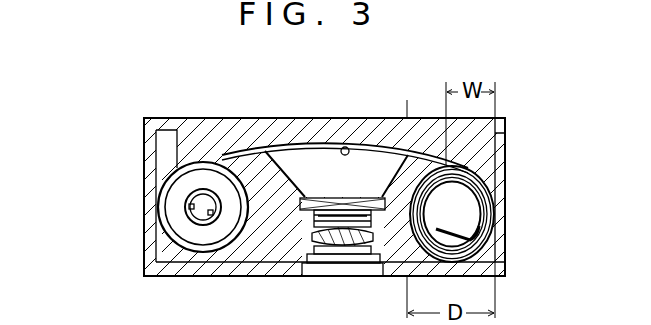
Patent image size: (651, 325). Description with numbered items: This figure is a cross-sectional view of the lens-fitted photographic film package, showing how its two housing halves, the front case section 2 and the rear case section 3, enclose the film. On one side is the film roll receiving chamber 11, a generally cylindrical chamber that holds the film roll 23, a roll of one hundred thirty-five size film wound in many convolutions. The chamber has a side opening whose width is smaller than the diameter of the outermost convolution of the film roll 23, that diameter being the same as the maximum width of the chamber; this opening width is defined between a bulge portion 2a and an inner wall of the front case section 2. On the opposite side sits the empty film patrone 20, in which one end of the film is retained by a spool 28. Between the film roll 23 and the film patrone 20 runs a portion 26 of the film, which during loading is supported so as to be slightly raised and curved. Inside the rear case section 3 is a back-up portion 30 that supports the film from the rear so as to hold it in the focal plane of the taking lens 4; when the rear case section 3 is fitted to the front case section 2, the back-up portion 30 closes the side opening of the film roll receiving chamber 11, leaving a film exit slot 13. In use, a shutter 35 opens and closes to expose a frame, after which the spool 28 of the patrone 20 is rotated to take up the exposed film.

The front case section 2 is at (144, 238).
The bulge portion 2a is at (434, 166).
The rear case section 3 is at (232, 118).
The taking lens 4 is at (343, 263).
The film roll receiving chamber 11 is at (458, 218).
The film exit slot 13 is at (472, 164).
The film patrone 20 is at (162, 208).
The film roll 23 is at (491, 194).
The portion of the film 26 is at (318, 150).
The spool 28 is at (190, 203).
The back-up portion 30 is at (350, 142).
The shutter 35 is at (345, 196).